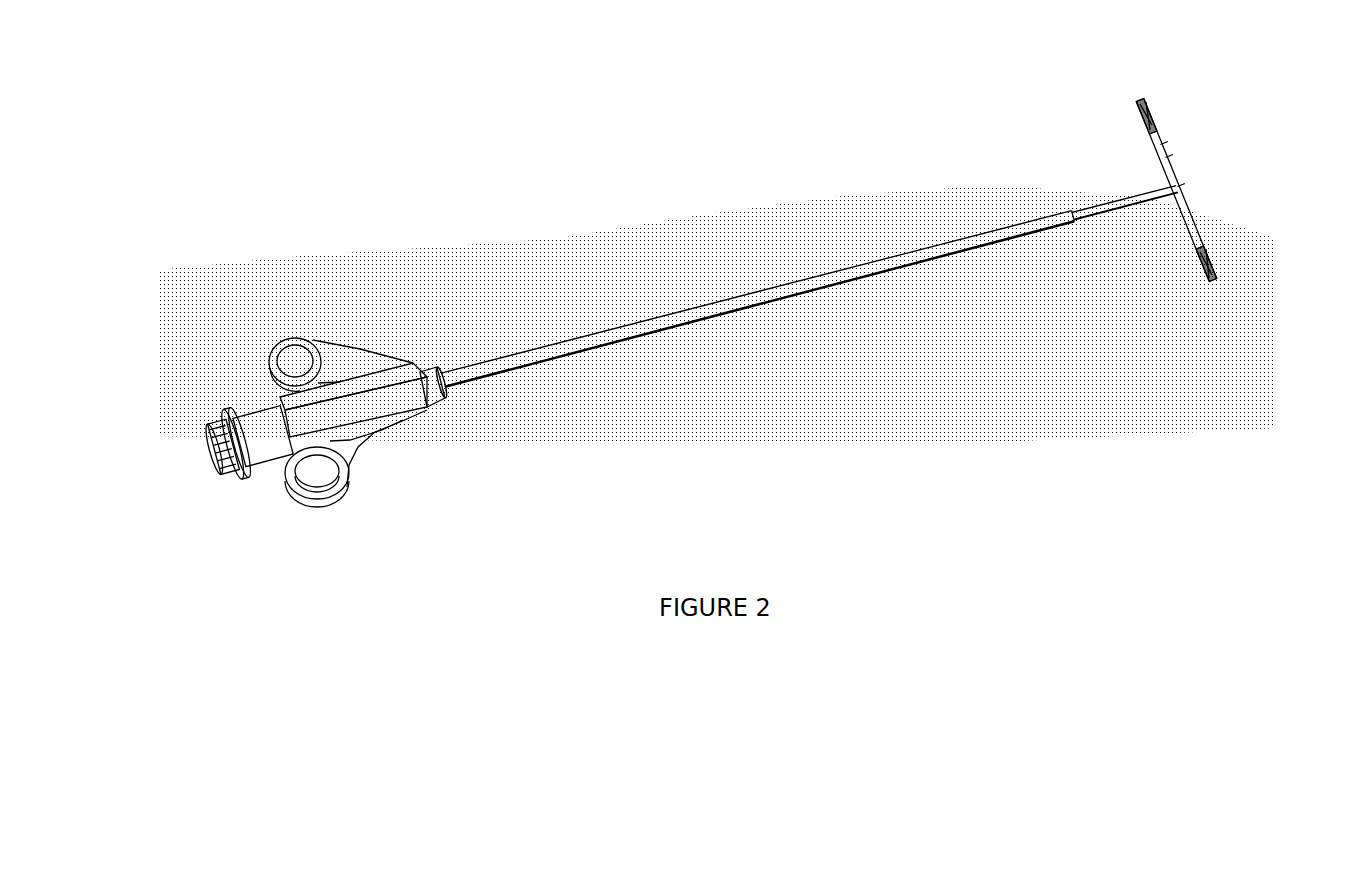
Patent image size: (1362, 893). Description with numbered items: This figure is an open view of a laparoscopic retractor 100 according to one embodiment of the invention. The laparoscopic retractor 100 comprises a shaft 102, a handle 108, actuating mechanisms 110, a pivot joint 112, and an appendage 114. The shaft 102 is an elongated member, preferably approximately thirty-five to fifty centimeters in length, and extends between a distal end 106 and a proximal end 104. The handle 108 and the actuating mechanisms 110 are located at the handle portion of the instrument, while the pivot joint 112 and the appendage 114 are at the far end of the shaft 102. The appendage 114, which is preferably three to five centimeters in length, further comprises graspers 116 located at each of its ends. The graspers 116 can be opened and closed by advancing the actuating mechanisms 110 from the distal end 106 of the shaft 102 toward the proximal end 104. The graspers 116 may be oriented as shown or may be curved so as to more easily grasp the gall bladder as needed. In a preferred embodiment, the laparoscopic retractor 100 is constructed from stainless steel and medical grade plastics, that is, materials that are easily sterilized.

The laparoscopic retractor 100 is at (492, 190).
The shaft 102 is at (765, 278).
The proximal end 104 is at (1027, 250).
The distal end 106 is at (480, 406).
The handle 108 is at (195, 435).
The actuating mechanisms 110 is at (265, 333).
The pivot joint 112 is at (1198, 179).
The appendage 114 is at (1178, 150).
The graspers 116 is at (1122, 110).